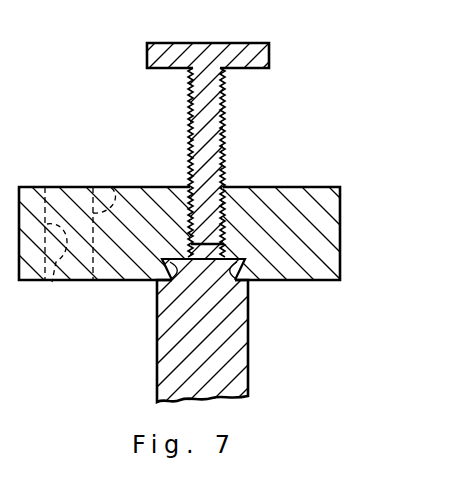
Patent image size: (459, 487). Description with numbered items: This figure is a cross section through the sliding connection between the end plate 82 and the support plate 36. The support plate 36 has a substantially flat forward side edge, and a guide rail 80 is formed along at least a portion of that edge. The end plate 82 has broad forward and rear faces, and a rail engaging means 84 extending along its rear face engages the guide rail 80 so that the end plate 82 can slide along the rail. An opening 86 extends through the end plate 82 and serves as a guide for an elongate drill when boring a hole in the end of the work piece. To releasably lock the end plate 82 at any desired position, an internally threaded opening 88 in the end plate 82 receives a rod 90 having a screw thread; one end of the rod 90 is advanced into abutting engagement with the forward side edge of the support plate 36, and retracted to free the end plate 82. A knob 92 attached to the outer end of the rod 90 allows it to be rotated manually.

The support plate 36 is at (230, 367).
The guide rail 80 is at (160, 283).
The end plate 82 is at (312, 190).
The rail engaging means 84 is at (158, 280).
The opening 86 is at (110, 186).
The opening 88 is at (193, 237).
The rod 90 is at (222, 134).
The knob 92 is at (222, 52).